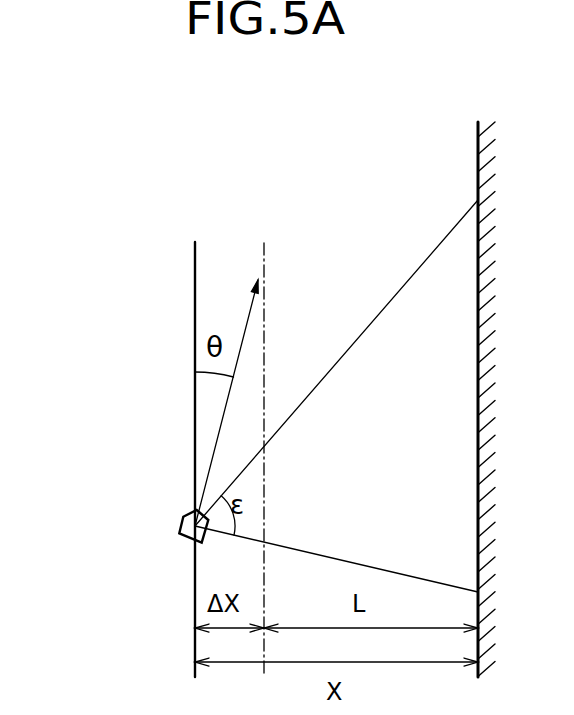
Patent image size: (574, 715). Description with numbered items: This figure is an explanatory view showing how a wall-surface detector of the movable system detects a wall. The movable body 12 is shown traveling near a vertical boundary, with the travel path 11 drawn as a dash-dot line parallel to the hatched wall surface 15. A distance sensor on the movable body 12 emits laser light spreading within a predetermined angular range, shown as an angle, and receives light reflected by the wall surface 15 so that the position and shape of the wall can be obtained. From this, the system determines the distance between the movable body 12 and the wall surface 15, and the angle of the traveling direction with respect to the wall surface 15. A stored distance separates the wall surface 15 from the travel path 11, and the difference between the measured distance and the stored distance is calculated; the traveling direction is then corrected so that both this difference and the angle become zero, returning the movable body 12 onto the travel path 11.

The travel path 11 is at (265, 272).
The movable body 12 is at (183, 521).
The wall surface 15 is at (478, 176).